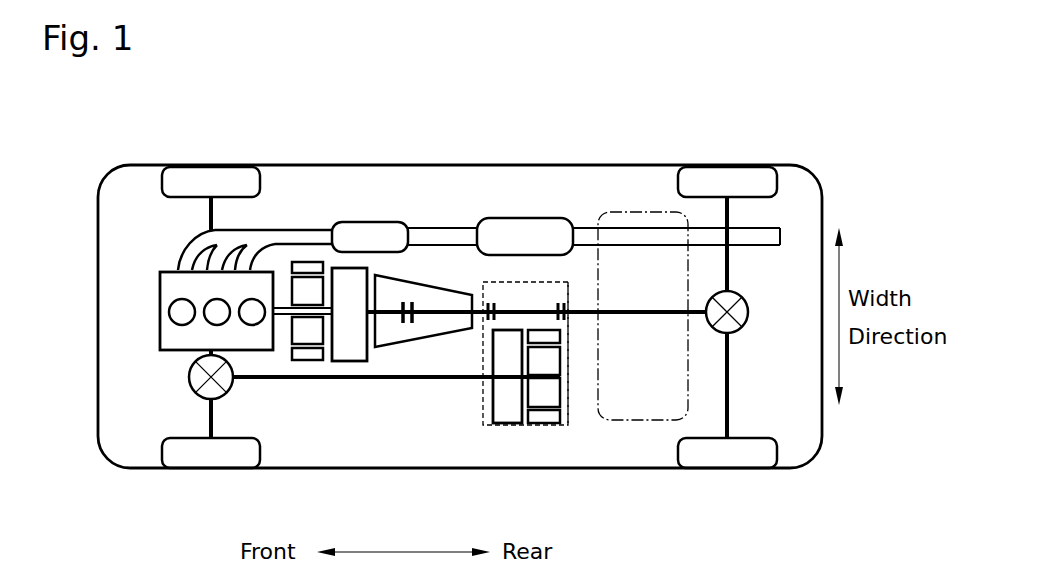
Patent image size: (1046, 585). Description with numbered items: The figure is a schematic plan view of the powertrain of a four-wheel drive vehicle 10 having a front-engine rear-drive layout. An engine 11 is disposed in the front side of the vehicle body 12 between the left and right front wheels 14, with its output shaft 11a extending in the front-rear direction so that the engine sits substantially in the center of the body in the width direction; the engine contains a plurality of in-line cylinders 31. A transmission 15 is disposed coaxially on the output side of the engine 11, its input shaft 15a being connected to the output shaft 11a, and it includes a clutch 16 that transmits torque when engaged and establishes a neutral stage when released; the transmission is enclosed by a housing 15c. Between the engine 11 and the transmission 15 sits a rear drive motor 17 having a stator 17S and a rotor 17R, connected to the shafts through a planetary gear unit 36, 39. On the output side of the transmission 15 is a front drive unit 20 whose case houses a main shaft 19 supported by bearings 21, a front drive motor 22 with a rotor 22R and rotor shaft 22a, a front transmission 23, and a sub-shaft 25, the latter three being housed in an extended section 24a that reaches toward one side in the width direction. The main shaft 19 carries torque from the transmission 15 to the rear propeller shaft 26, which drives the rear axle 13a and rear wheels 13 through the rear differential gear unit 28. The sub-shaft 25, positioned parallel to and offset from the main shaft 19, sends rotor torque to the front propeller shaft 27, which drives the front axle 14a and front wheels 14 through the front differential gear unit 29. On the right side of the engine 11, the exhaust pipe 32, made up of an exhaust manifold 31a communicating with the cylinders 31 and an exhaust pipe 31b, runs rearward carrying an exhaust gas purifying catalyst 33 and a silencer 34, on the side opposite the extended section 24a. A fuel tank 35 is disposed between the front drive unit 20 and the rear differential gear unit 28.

The four-wheel drive vehicle 10 is at (92, 156).
The engine 11 is at (147, 269).
The output shaft 11a is at (282, 318).
The vehicle body 12 is at (98, 318).
The rear wheels 13 is at (700, 176).
The rear axle 13a is at (731, 385).
The front wheels 14 is at (205, 179).
The front axle 14a is at (210, 417).
The transmission 15 is at (433, 276).
The input shaft 15a is at (372, 306).
The housing 15c is at (455, 296).
The clutch 16 is at (415, 322).
The rear drive motor 17 is at (289, 324).
The stator 17S is at (305, 263).
The rotor 17R is at (304, 358).
The main shaft 19 is at (525, 308).
The front drive unit 20 is at (649, 350).
The bearings 21 is at (560, 303).
The front drive motor 22 is at (668, 397).
The rotor shaft 22a is at (538, 382).
The rotor 22R is at (668, 406).
The front transmission 23 is at (508, 408).
The extended section 24a is at (571, 398).
The sub-shaft 25 is at (493, 380).
The rear propeller shaft 26 is at (628, 308).
The front propeller shaft 27 is at (424, 385).
The rear differential gear unit 28 is at (750, 313).
The front differential gear unit 29 is at (190, 382).
The cylinders 31 is at (172, 318).
The exhaust manifold 31a is at (205, 238).
The exhaust pipe 31b is at (256, 235).
The exhaust pipe 32 is at (467, 219).
The exhaust gas purifying catalyst 33 is at (374, 224).
The silencer 34 is at (550, 226).
The fuel tank 35 is at (640, 212).
The planetary gear unit 36 is at (366, 365).
The planetary gear unit 39 is at (352, 378).